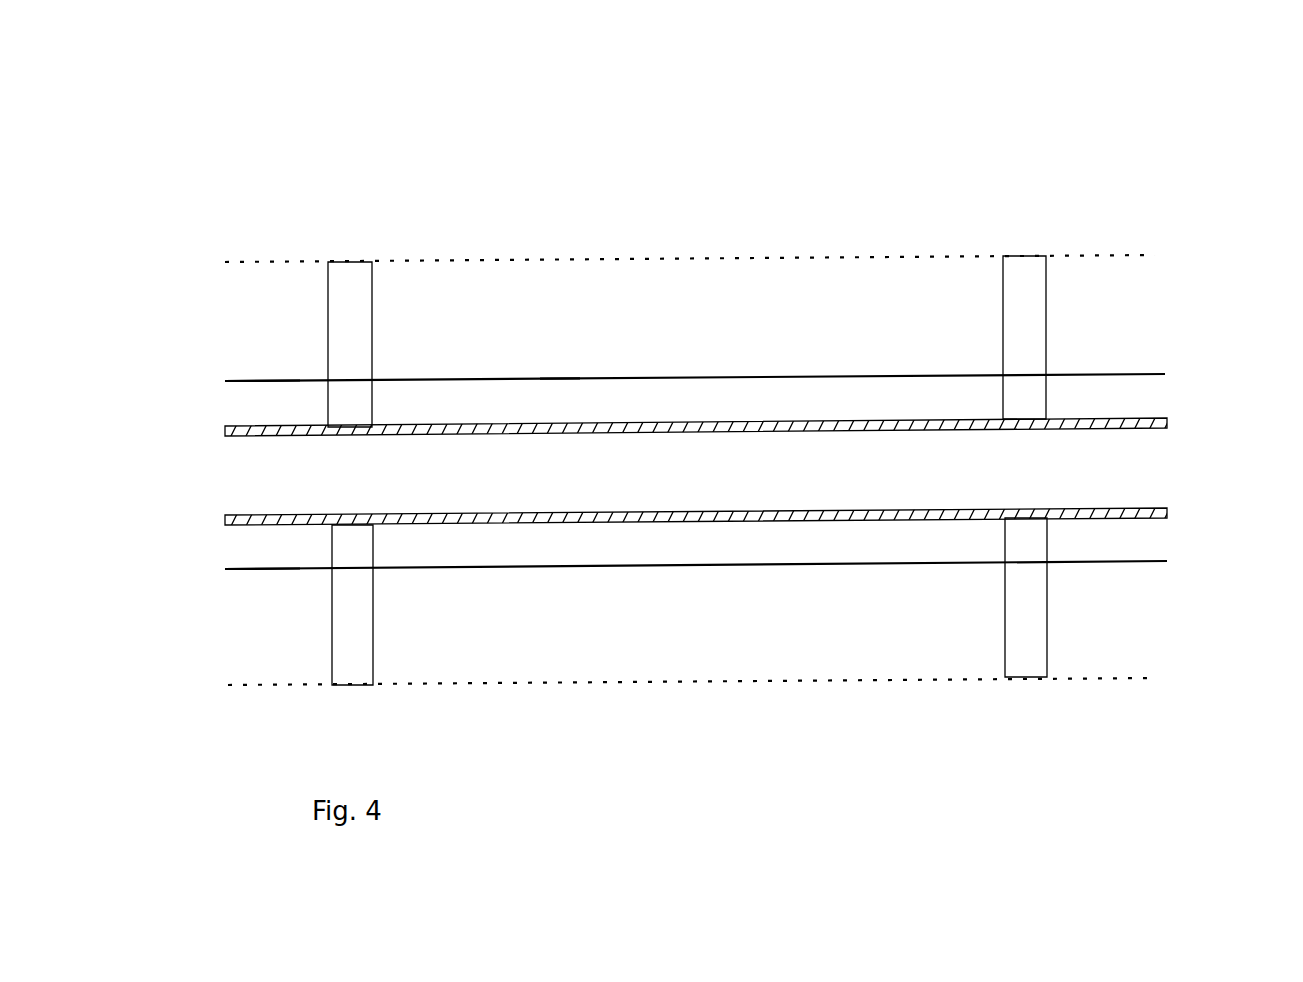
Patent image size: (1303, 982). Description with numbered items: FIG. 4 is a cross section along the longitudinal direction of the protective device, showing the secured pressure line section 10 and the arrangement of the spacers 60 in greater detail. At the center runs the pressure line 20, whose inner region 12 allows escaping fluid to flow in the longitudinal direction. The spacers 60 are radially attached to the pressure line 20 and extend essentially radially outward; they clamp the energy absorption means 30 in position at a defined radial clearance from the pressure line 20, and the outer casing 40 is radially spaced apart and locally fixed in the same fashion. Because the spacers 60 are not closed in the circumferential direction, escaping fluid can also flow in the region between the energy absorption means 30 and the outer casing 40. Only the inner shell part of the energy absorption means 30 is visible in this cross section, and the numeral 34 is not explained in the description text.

The secured pressure line section 10 is at (754, 152).
The inner region 12 is at (558, 376).
The pressure line 20 is at (1167, 418).
The energy absorption means 30 is at (1113, 364).
The spacer end portion 34 is at (283, 380).
The outer casing 40 is at (1115, 252).
The spacers 60 is at (340, 283).